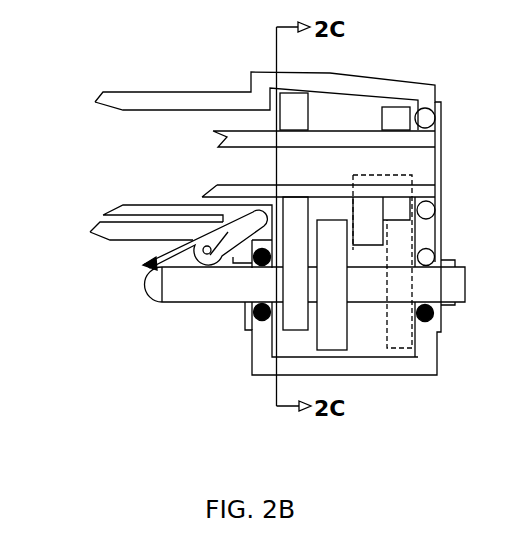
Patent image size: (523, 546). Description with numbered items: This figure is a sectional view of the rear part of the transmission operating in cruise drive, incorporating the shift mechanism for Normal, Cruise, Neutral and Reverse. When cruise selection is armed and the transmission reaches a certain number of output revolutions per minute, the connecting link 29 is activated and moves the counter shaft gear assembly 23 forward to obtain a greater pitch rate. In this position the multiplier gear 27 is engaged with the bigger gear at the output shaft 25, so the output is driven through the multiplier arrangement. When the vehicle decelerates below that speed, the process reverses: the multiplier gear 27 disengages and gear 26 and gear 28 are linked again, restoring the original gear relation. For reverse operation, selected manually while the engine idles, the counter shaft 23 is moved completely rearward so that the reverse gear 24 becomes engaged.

The counter shaft gear assembly 23 is at (233, 289).
The reverse gear 24 is at (374, 231).
The bigger gear at the output shaft 25 is at (290, 119).
The gear 26 is at (387, 120).
The multiplier gear 27 is at (292, 313).
The gear 28 is at (337, 317).
The connecting link 29 is at (143, 265).